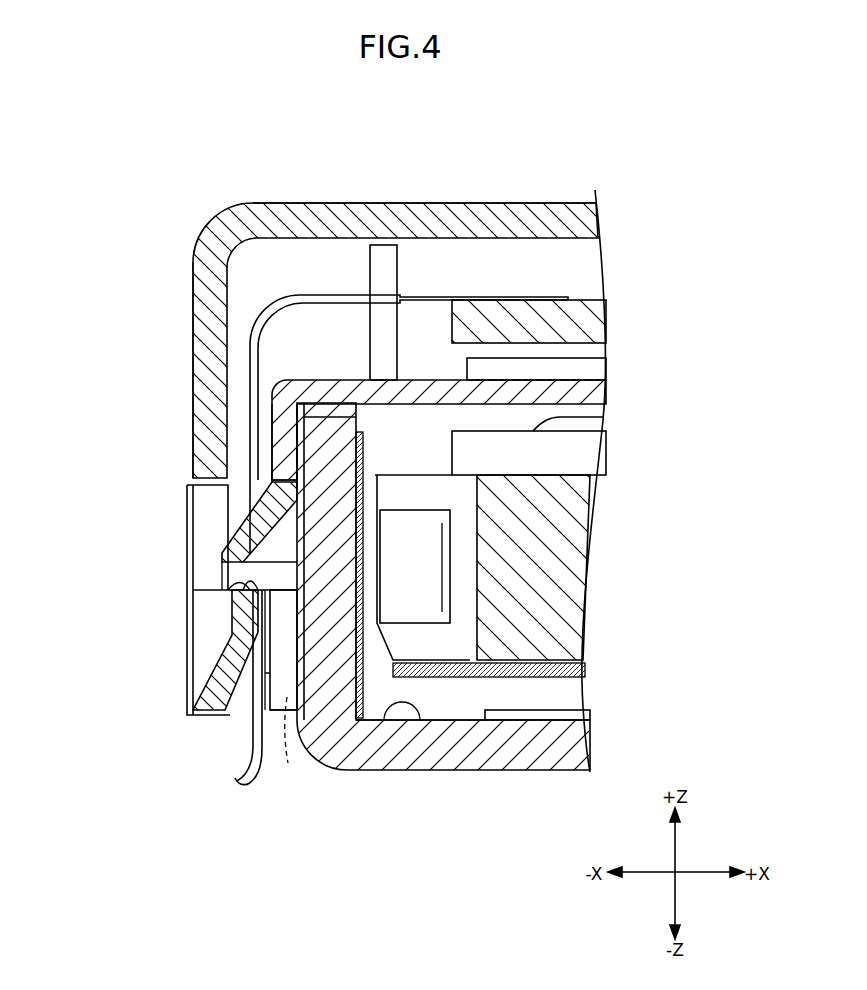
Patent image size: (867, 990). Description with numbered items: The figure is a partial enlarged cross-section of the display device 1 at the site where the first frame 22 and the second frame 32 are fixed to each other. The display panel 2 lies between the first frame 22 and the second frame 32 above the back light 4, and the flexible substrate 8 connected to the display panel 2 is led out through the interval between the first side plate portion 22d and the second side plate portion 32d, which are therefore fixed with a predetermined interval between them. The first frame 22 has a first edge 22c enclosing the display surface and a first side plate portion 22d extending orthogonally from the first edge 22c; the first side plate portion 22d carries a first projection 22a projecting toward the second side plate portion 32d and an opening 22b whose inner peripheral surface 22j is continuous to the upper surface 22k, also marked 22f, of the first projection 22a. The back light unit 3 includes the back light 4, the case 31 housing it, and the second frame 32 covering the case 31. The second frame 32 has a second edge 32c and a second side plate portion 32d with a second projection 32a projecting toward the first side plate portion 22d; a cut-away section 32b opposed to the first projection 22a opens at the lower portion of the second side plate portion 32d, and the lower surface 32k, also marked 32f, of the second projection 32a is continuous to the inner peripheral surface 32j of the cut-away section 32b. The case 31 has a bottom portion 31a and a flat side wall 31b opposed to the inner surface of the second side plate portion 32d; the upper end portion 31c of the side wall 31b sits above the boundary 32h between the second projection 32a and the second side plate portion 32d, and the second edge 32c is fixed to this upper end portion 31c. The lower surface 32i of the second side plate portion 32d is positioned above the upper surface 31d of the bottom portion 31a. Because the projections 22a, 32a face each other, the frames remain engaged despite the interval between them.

The display device 1 is at (540, 166).
The display panel 2 is at (597, 323).
The back light unit 3 is at (645, 461).
The back light 4 is at (582, 503).
The flexible substrate 8 is at (250, 748).
The first frame 22 is at (392, 188).
The first projection 22a is at (233, 653).
The opening 22b is at (195, 520).
The first edge 22c is at (334, 210).
The first side plate portion 22d is at (212, 330).
The housing contact surface 22f is at (253, 567).
The inner peripheral surface 22j is at (255, 518).
The upper surface 22k is at (157, 594).
The case 31 is at (485, 758).
The bottom portion 31a is at (432, 755).
The side wall 31b is at (312, 456).
The upper end portion 31c is at (308, 375).
The upper surface 31d is at (384, 722).
The second frame 32 is at (596, 390).
The second projection 32a is at (238, 540).
The cut-away section 32b is at (288, 742).
The second edge 32c is at (313, 415).
The second side plate portion 32d is at (297, 445).
The cover contact surface 32f is at (240, 596).
The boundary 32h is at (258, 476).
The lower surface 32i is at (292, 705).
The inner peripheral surface 32j is at (267, 688).
The lower surface 32k is at (149, 615).